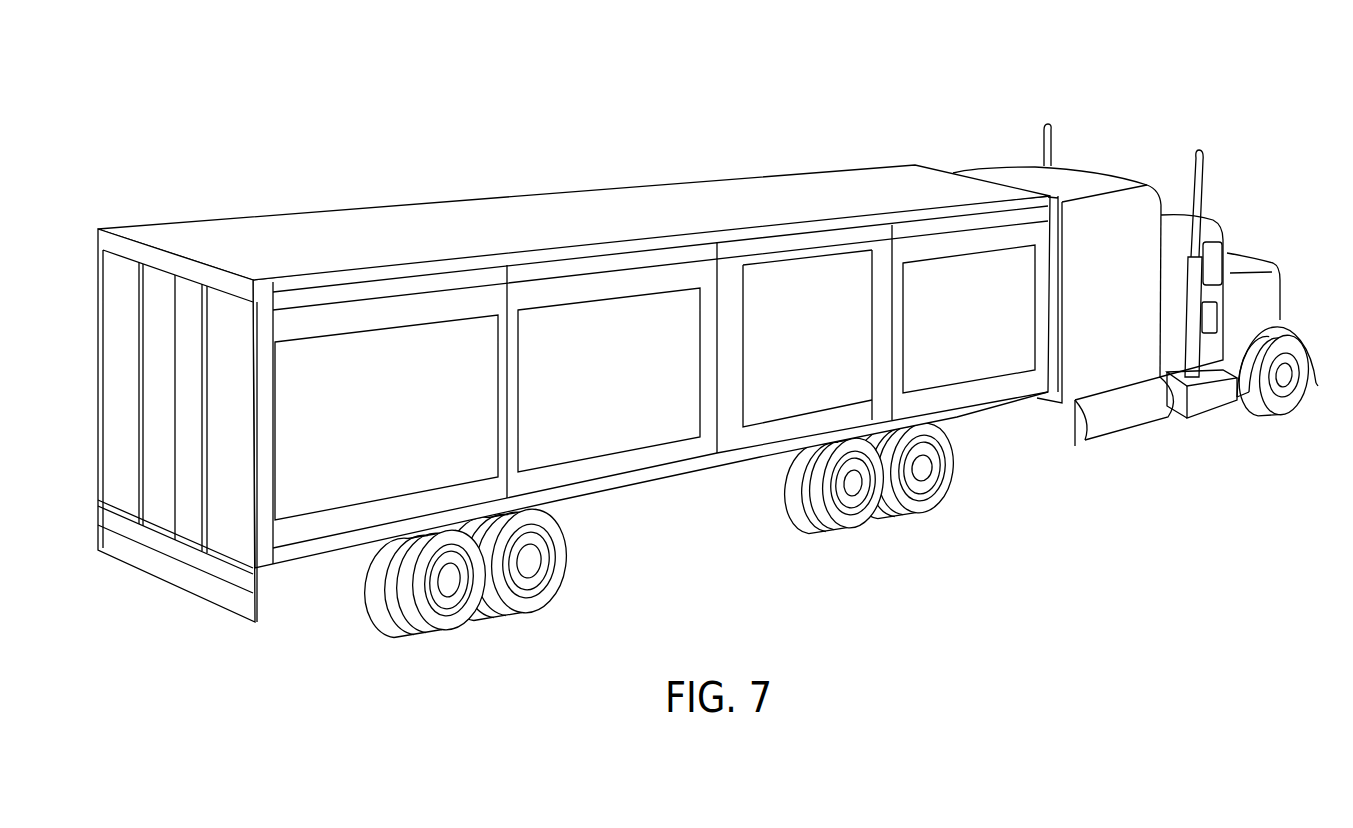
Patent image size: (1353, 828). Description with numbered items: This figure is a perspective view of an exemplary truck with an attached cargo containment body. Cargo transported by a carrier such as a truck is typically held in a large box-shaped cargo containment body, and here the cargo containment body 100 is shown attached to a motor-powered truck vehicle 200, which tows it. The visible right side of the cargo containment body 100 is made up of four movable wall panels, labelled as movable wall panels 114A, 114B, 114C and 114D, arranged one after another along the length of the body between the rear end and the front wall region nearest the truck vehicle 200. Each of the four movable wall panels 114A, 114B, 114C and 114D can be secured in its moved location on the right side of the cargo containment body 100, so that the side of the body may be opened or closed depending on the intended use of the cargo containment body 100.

The cargo containment body 100 is at (578, 399).
The motor-powered truck vehicle 200 is at (1115, 122).
The movable wall panel 114A is at (407, 426).
The movable wall panel 114B is at (634, 388).
The movable wall panel 114C is at (829, 353).
The movable wall panel 114D is at (994, 332).